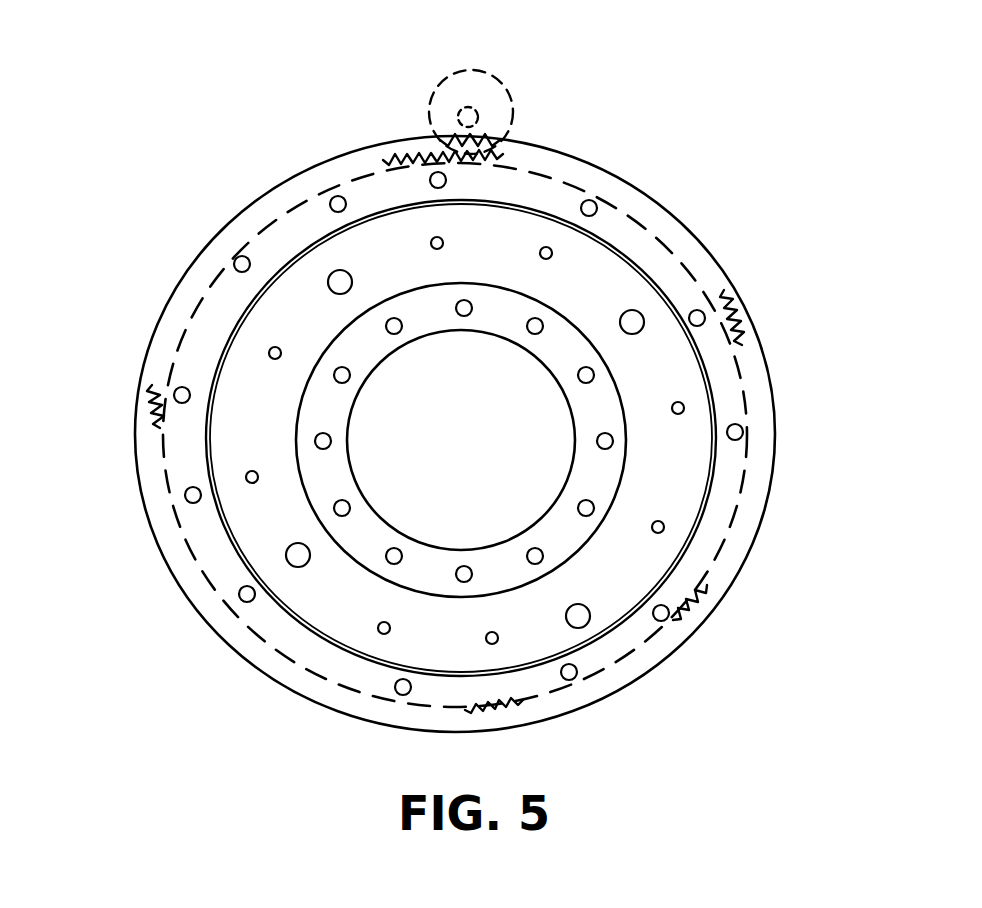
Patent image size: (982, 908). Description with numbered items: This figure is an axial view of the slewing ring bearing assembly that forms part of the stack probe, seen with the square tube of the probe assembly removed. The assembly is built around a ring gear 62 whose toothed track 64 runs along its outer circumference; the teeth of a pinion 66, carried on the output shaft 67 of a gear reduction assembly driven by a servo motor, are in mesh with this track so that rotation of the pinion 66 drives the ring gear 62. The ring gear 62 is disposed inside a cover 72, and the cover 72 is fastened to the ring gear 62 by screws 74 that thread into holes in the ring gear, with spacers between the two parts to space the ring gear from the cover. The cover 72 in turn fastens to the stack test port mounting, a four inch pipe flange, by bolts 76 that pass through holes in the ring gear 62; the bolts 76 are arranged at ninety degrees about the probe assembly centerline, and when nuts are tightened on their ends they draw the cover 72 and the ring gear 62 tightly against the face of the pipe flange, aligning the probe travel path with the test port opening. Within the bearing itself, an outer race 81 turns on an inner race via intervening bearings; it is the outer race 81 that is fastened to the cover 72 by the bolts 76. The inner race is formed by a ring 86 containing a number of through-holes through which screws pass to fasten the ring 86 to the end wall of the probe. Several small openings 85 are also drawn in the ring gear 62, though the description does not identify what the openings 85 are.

The ring gear 62 is at (553, 189).
The toothed track 64 is at (397, 152).
The pinion 66 is at (500, 91).
The output shaft 67 is at (466, 105).
The cover 72 is at (752, 308).
The screws 74 is at (332, 199).
The bolts 76 is at (345, 272).
The outer race 81 is at (630, 416).
The small apertures 85 is at (540, 252).
The ring 86 is at (530, 297).